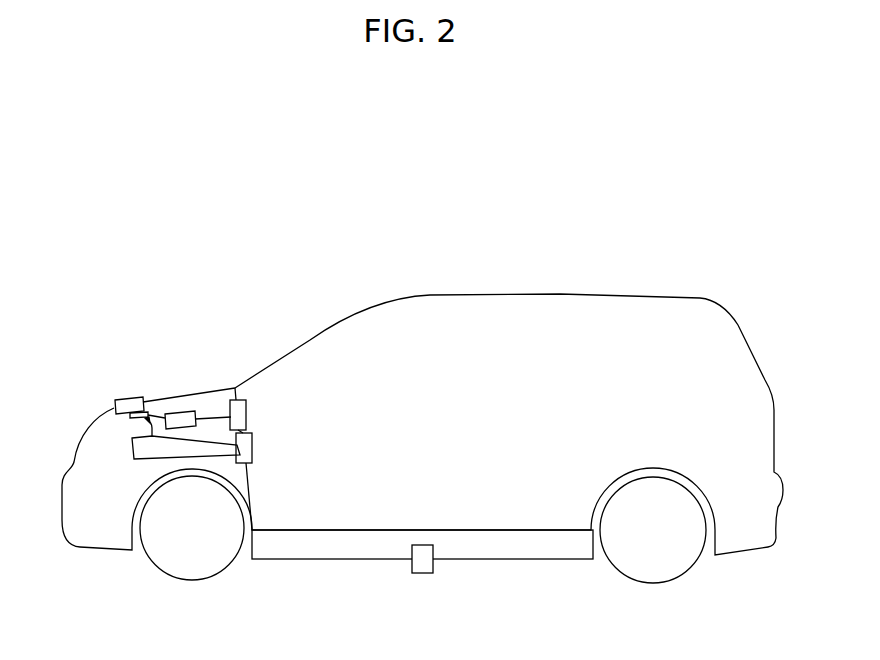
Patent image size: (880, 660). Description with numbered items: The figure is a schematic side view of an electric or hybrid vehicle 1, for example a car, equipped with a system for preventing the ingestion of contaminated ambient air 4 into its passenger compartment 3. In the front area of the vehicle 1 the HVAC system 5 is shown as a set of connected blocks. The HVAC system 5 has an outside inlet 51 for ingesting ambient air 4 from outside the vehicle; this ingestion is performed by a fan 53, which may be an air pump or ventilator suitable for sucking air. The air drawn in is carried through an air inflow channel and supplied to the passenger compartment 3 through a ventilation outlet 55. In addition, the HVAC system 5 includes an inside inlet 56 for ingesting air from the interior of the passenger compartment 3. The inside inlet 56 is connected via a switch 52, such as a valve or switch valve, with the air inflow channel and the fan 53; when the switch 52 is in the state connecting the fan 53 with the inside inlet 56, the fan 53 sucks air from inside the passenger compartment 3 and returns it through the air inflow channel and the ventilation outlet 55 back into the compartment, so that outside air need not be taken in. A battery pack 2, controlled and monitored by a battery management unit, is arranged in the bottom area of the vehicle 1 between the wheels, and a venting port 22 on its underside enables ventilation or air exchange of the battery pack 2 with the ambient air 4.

The vehicle 1 is at (684, 278).
The battery pack 2 is at (504, 545).
The venting port 22 is at (422, 574).
The passenger compartment 3 is at (497, 418).
The ambient air 4 is at (44, 415).
The HVAC system 5 is at (209, 390).
The outside inlet 51 is at (128, 400).
The switch 52 is at (135, 427).
The fan 53 is at (178, 413).
The ventilation outlet 55 is at (247, 412).
The inside inlet 56 is at (252, 445).